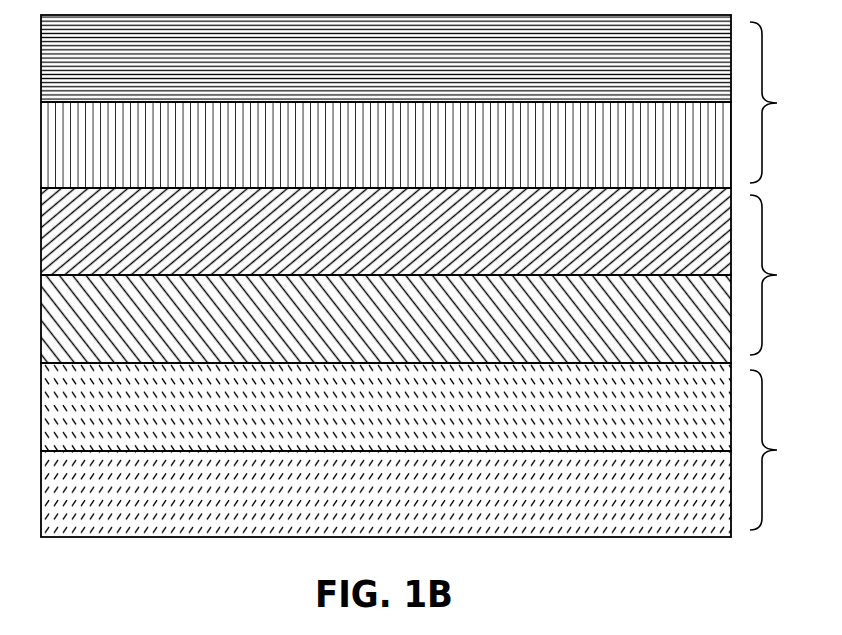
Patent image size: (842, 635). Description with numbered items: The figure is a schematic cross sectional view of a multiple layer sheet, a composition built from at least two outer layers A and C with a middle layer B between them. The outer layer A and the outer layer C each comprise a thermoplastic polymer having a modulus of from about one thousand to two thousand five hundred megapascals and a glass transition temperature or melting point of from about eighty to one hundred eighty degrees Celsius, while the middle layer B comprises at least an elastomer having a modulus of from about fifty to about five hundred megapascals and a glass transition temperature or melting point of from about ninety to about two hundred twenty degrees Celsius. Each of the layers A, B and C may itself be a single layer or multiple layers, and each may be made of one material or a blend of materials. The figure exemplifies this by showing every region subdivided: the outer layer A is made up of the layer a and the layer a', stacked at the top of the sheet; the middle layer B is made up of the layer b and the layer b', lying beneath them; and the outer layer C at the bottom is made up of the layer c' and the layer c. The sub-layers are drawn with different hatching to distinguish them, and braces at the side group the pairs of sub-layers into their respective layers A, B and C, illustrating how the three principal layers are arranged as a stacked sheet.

The layer a is at (372, 58).
The layer a' is at (371, 145).
The layer b is at (373, 231).
The layer b' is at (372, 319).
The layer c' is at (372, 407).
The layer c is at (373, 494).
The outer layer A is at (776, 102).
The middle layer B is at (776, 275).
The outer layer C is at (776, 450).